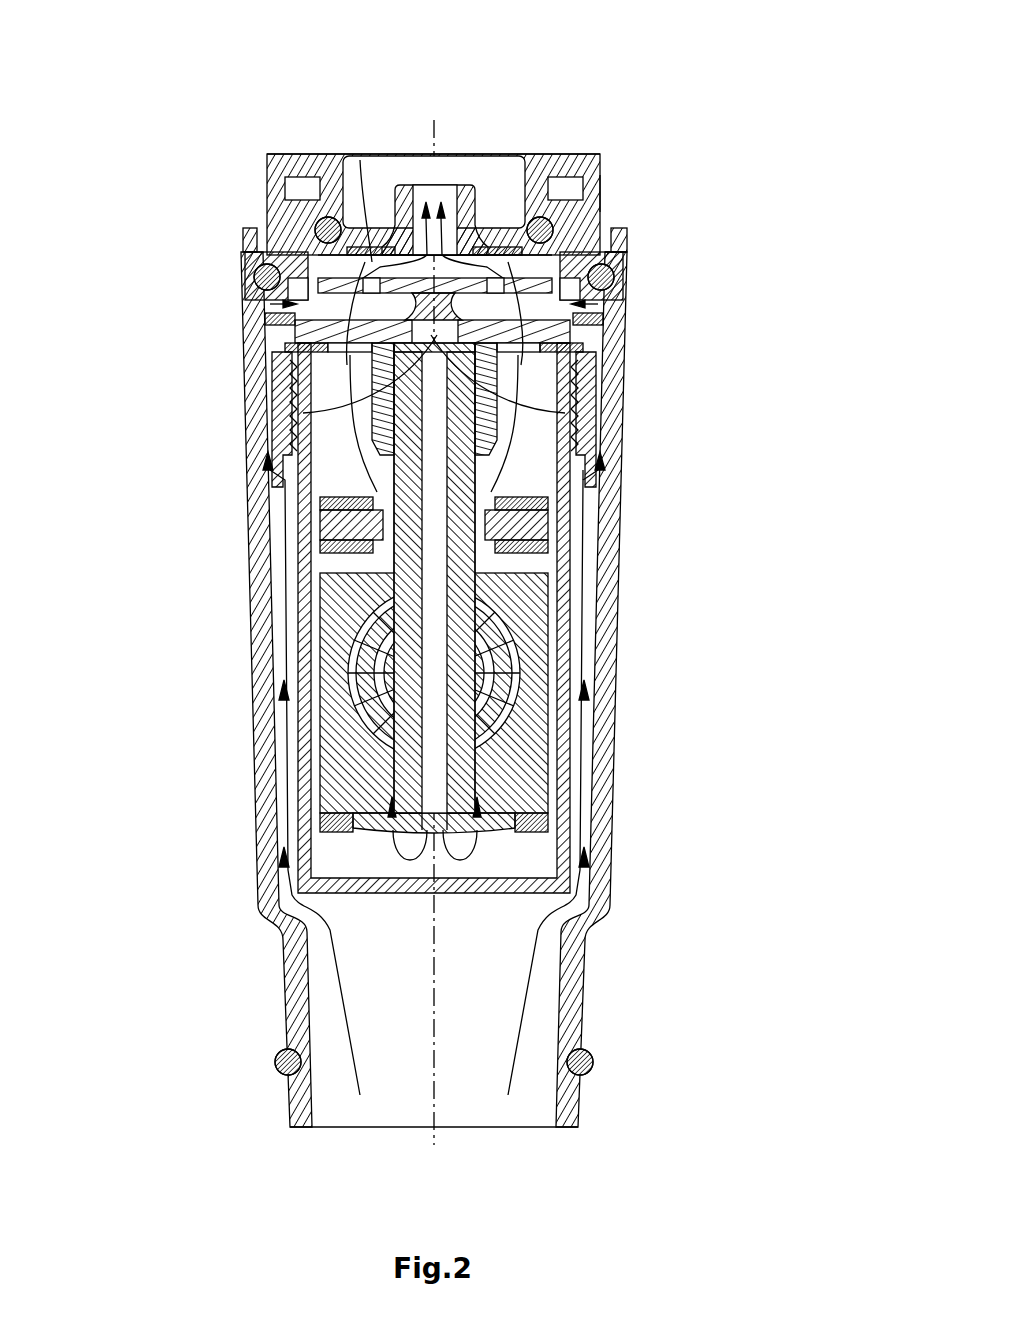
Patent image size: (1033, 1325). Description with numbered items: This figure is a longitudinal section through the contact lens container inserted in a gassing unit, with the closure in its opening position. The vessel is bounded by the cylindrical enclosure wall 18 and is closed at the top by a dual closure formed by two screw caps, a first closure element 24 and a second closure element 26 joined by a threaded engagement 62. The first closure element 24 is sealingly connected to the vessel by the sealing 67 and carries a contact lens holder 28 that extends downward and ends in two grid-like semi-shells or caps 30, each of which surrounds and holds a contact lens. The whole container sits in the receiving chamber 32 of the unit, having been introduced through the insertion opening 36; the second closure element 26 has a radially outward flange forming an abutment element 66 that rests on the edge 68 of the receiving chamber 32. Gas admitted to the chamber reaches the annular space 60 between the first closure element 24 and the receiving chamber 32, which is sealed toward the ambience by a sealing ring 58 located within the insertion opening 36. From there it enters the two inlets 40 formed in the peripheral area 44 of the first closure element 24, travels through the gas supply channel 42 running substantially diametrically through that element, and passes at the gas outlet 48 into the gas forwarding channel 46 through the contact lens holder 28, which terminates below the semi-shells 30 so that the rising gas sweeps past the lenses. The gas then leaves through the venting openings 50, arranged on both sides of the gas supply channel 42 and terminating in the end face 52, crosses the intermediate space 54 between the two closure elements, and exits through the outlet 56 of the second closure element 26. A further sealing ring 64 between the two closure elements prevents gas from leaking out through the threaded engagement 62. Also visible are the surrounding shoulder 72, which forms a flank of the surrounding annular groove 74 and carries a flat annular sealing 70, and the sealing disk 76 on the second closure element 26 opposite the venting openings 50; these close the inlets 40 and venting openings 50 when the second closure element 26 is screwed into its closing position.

The cylindrical enclosure wall 18 is at (570, 650).
The first closure element 24 is at (587, 350).
The second closure element 26 is at (588, 157).
The contact lens holder 28 is at (570, 517).
The grid-like semi-shells or caps 30 is at (520, 765).
The receiving chamber 32 is at (603, 718).
The insertion opening 36 is at (612, 231).
The inlets 40 is at (253, 267).
The gas supply channel 42 is at (593, 467).
The peripheral area 44 is at (603, 378).
The gas forwarding channel 46 is at (430, 582).
The gas outlet 48 is at (290, 417).
The venting openings 50 is at (290, 237).
The end face 52 is at (470, 95).
The intermediate space 54 is at (512, 262).
The outlet 56 is at (425, 195).
The sealing ring 58 is at (630, 287).
The annular space 60 is at (258, 375).
The threaded engagement 62 is at (603, 192).
The further sealing ring 64 is at (543, 157).
The abutment element 66 is at (253, 238).
The sealing 67 is at (600, 373).
The edge 68 is at (627, 252).
The flat annular sealing 70 is at (605, 310).
The surrounding shoulder 72 is at (262, 352).
The surrounding annular groove 74 is at (265, 304).
The sealing disk 76 is at (372, 228).